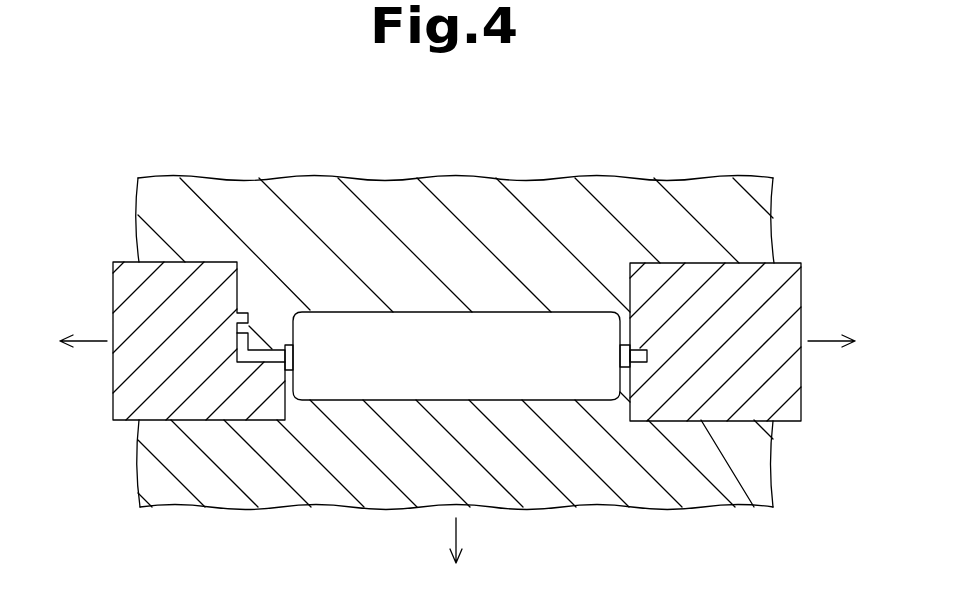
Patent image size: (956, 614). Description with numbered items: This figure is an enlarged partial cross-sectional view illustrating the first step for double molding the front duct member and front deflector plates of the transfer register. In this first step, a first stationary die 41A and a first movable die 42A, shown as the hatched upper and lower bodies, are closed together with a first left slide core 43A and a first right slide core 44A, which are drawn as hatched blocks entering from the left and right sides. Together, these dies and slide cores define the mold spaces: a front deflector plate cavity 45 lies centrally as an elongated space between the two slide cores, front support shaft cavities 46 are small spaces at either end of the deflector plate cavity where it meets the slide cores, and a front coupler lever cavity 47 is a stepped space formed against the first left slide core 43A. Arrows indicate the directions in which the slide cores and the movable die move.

The first stationary die 41A is at (386, 193).
The first movable die 42A is at (377, 490).
The first left slide core 43A is at (122, 287).
The first right slide core 44A is at (780, 301).
The front deflector plate cavity 45 is at (482, 327).
The front support shaft cavity 46 is at (293, 358).
The front coupler lever cavity 47 is at (243, 339).